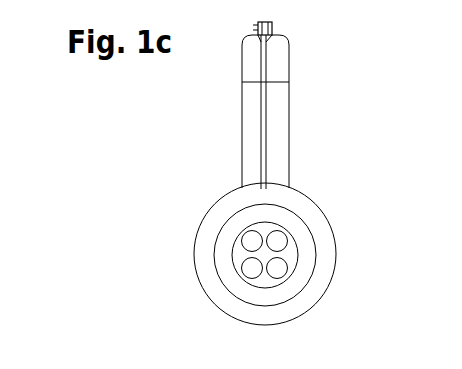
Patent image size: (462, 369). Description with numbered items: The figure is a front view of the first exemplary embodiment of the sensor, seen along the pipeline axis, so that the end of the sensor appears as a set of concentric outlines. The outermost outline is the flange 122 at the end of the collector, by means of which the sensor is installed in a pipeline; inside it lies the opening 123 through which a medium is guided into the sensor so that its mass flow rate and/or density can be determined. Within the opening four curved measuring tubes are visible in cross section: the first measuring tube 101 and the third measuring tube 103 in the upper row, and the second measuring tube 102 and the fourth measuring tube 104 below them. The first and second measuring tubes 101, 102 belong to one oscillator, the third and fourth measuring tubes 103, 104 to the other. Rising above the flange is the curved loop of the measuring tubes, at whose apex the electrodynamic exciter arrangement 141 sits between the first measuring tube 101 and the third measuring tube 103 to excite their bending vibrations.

The electrodynamic exciter arrangement 141 is at (272, 25).
The first measuring tube 101 is at (252, 122).
The third measuring tube 103 is at (277, 143).
The flange 122 is at (293, 195).
The opening 123 is at (288, 252).
The second measuring tube 102 is at (277, 268).
The fourth measuring tube 104 is at (253, 268).